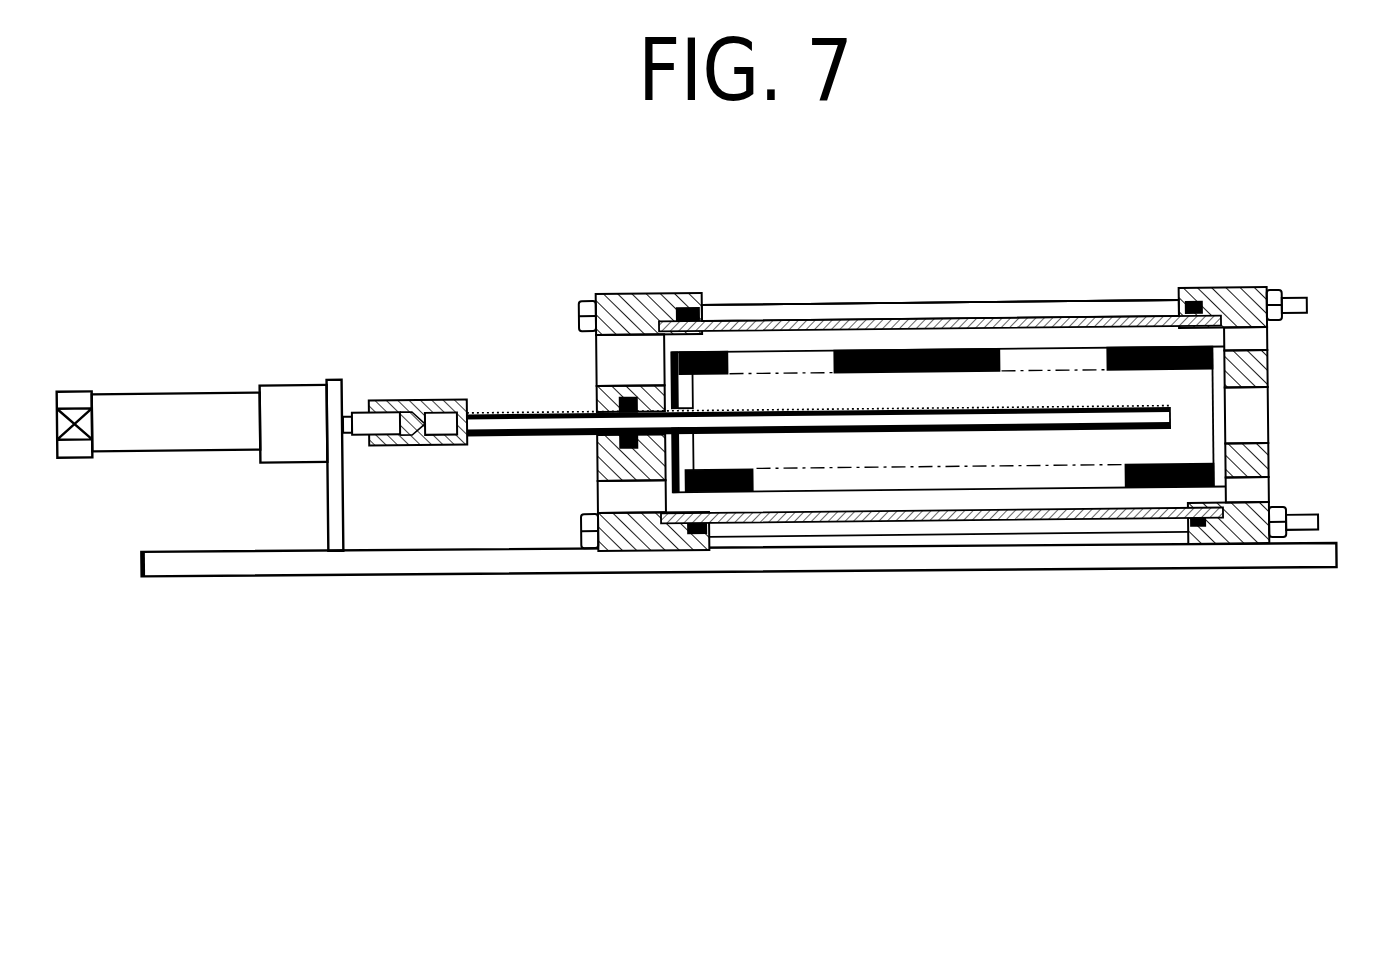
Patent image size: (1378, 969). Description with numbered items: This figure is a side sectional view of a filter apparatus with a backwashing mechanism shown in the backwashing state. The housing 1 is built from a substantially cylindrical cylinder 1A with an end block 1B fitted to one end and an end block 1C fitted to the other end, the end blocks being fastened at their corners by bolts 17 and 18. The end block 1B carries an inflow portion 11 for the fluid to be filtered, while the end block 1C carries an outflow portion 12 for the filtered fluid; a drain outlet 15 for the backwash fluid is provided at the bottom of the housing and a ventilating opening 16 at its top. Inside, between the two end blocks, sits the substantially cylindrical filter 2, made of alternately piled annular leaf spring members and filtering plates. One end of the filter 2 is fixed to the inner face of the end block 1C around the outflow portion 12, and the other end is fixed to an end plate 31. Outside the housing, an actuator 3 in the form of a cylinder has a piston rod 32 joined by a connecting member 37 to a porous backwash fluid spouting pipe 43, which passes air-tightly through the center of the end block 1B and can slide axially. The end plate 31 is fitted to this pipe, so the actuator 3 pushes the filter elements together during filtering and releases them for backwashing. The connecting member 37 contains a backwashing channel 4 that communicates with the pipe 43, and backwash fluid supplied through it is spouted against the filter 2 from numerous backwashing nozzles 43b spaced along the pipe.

The housing 1 is at (918, 286).
The cylinder 1A is at (862, 312).
The end block 1B is at (650, 290).
The end block 1C is at (1210, 284).
The filter 2 is at (984, 344).
The actuator 3 is at (265, 370).
The backwashing channel 4 is at (432, 452).
The inflow portion 11 is at (615, 360).
The outflow portion 12 is at (1272, 418).
The drain outlet 15 is at (615, 492).
The ventilating opening 16 is at (1272, 337).
The bolt 17 is at (787, 312).
The bolt 18 is at (1281, 293).
The end plate 31 is at (668, 497).
The piston rod 32 is at (360, 416).
The connecting member 37 is at (424, 400).
The backwash fluid spouting pipe 43 is at (810, 438).
The backwashing nozzle 43b is at (962, 432).